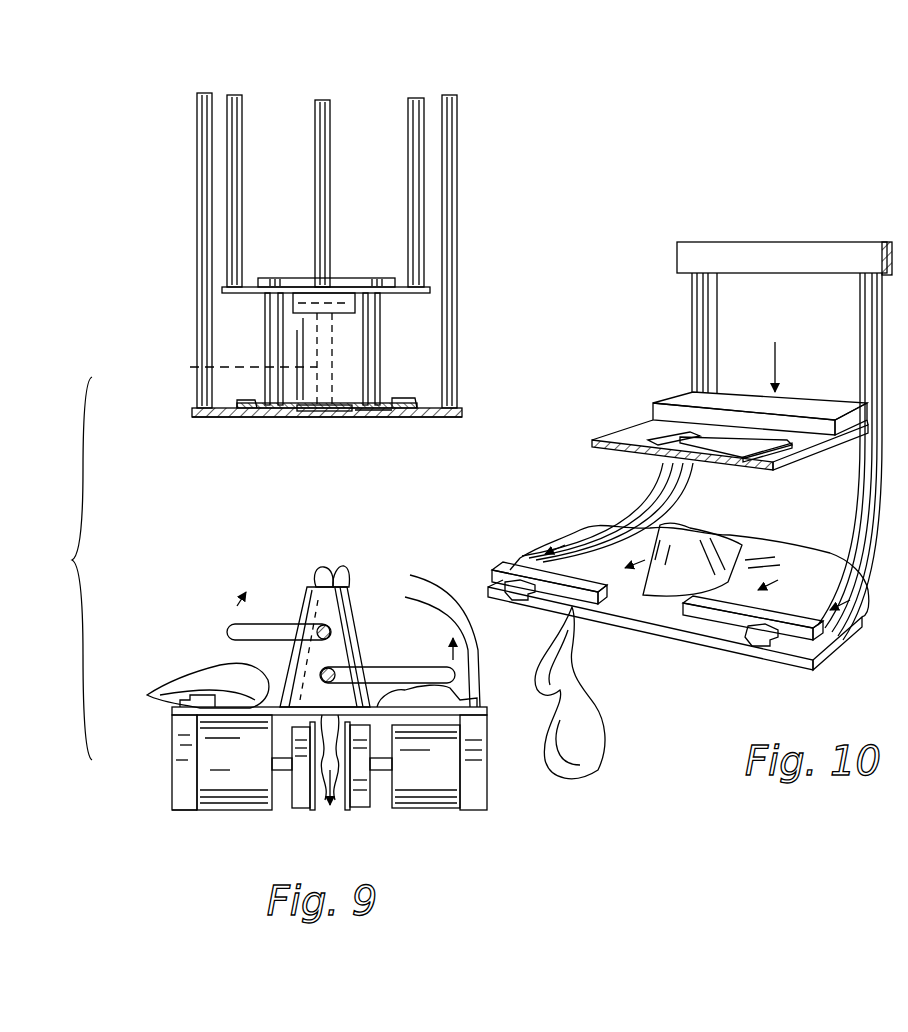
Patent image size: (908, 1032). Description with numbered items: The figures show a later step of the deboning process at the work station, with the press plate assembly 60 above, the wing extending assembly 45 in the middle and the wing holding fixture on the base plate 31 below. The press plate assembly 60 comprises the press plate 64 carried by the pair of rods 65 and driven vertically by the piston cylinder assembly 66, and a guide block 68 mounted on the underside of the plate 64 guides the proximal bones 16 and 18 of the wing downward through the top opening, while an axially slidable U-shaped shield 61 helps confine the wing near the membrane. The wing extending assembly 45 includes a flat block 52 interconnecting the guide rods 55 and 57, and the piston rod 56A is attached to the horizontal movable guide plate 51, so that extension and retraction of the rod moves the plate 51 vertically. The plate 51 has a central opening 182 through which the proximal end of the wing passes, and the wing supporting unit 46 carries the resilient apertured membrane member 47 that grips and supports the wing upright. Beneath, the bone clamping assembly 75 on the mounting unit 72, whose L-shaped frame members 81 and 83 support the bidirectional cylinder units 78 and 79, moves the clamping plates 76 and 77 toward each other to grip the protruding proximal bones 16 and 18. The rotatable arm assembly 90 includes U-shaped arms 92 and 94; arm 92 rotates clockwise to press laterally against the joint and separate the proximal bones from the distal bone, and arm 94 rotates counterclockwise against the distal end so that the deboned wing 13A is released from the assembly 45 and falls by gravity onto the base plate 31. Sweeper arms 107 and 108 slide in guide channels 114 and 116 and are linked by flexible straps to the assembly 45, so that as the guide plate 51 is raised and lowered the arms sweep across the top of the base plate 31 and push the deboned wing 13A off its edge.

In FIG. 9, the deboned wing 13A is at (178, 680).
In FIG. 10, the deboned wing 13A is at (560, 790).
In FIG. 9, the proximal bone 16 is at (320, 570).
In FIG. 9, the proximal bone 18 is at (338, 568).
In FIG. 9, the base plate 31 is at (428, 634).
In FIG. 10, the base plate 31 is at (795, 668).
In FIG. 9, the wing extending assembly 45 is at (235, 430).
In FIG. 10, the wing extending assembly 45 is at (605, 460).
In FIG. 9, the wing supporting unit 46 is at (400, 398).
In FIG. 10, the wing supporting unit 46 is at (668, 435).
In FIG. 9, the resilient membrane member 47 is at (375, 418).
In FIG. 9, the guide plate 51 is at (456, 418).
In FIG. 10, the guide plate 51 is at (810, 455).
In FIG. 10, the block 52 is at (805, 407).
In FIG. 9, the guide rod 55 is at (197, 290).
In FIG. 9, the piston rod 56A is at (197, 367).
In FIG. 9, the guide rod 57 is at (457, 368).
In FIG. 9, the press plate assembly 60 is at (466, 280).
In FIG. 9, the U-shaped shield 61 is at (283, 333).
In FIG. 9, the press plate 64 is at (410, 120).
In FIG. 9, the guide rod 65 is at (242, 130).
In FIG. 9, the piston cylinder assembly 66 is at (332, 118).
In FIG. 9, the guide block 68 is at (343, 305).
In FIG. 9, the mounting unit 72 is at (162, 739).
In FIG. 9, the bone clamping assembly 75 is at (185, 815).
In FIG. 9, the clamping plate 76 is at (313, 810).
In FIG. 9, the clamping plate 77 is at (346, 810).
In FIG. 9, the bidirectional cylinder unit 78 is at (240, 800).
In FIG. 9, the bidirectional cylinder unit 79 is at (430, 800).
In FIG. 9, the L-shaped frame member 81 is at (492, 790).
In FIG. 9, the L-shaped frame member 83 is at (170, 775).
In FIG. 9, the rotatable arm assembly 90 is at (205, 600).
In FIG. 9, the rotatable arm 92 is at (422, 665).
In FIG. 9, the rotatable arm 94 is at (270, 620).
In FIG. 10, the sweeper arm 107 is at (843, 647).
In FIG. 10, the sweeper arm 108 is at (492, 572).
In FIG. 9, the guide channel 114 is at (387, 599).
In FIG. 10, the guide channel 114 is at (860, 315).
In FIG. 9, the guide channel 116 is at (195, 700).
In FIG. 10, the guide channel 116 is at (692, 328).
In FIG. 9, the opening 182 is at (325, 418).